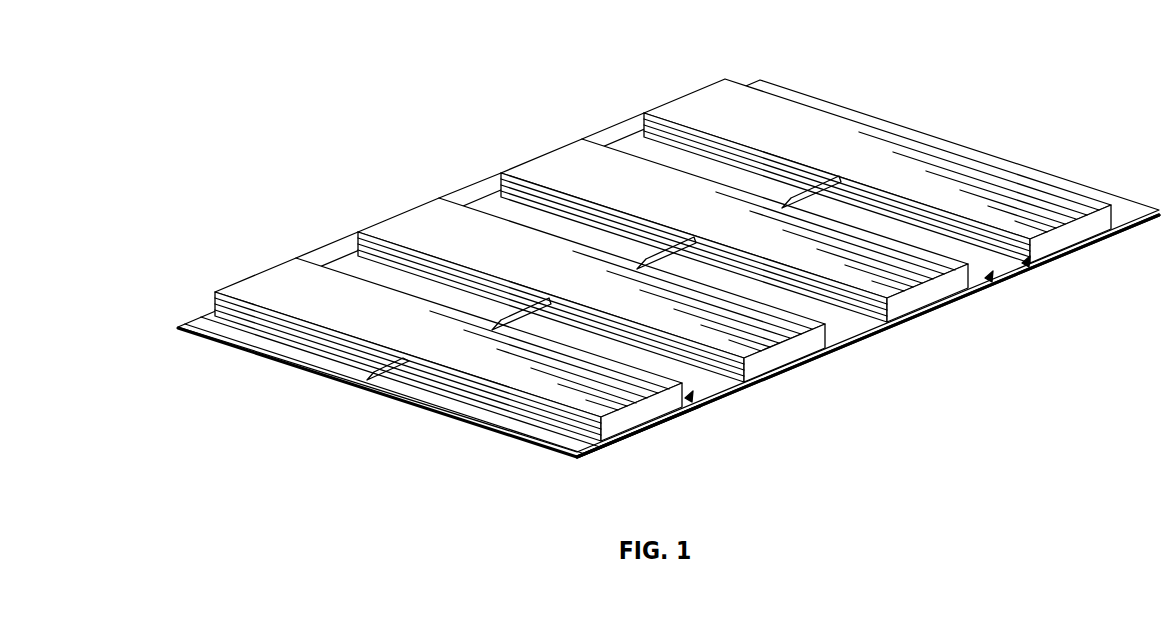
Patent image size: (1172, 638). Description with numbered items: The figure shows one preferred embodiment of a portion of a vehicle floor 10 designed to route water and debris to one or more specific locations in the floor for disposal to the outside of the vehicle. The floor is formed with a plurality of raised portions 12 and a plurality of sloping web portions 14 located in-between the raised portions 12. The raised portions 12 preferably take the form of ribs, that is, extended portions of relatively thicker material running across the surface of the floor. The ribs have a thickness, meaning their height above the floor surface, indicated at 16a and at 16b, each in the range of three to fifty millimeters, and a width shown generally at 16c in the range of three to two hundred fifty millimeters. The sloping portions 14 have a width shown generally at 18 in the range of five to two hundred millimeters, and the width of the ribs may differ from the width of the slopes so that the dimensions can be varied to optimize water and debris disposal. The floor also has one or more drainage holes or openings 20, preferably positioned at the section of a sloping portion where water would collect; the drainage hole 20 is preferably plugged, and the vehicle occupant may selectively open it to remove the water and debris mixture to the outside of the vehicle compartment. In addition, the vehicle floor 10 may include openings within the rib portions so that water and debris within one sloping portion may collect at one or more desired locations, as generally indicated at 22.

The vehicle floor 10 is at (652, 265).
The raised portions 12 is at (1037, 192).
The sloping web portions 14 is at (628, 140).
The rib thickness 16a is at (212, 311).
The rib thickness 16b is at (405, 365).
The rib width 16c is at (948, 203).
The sloping portion width 18 is at (1007, 280).
The drainage hole 20 is at (708, 384).
The collection location 22 is at (641, 432).